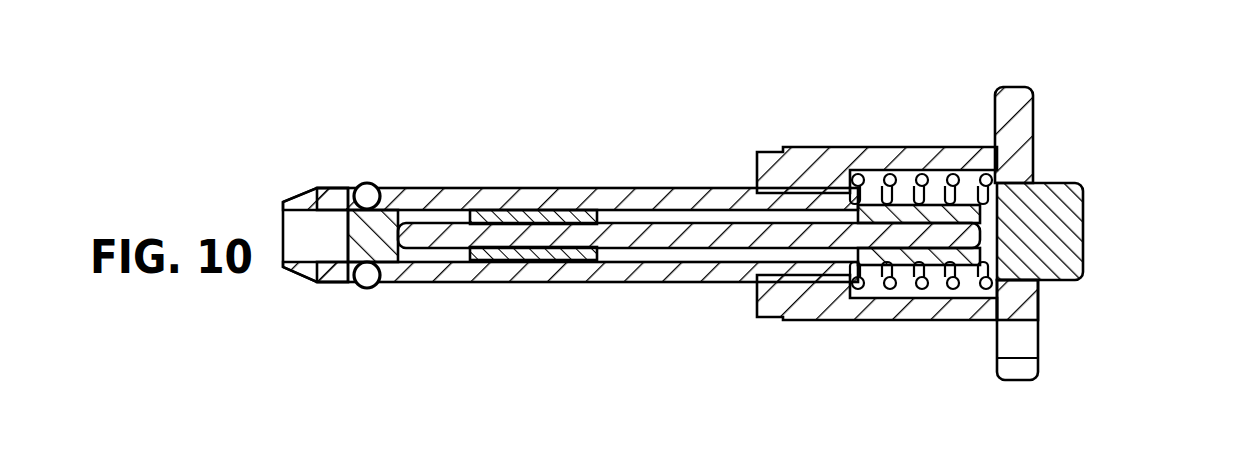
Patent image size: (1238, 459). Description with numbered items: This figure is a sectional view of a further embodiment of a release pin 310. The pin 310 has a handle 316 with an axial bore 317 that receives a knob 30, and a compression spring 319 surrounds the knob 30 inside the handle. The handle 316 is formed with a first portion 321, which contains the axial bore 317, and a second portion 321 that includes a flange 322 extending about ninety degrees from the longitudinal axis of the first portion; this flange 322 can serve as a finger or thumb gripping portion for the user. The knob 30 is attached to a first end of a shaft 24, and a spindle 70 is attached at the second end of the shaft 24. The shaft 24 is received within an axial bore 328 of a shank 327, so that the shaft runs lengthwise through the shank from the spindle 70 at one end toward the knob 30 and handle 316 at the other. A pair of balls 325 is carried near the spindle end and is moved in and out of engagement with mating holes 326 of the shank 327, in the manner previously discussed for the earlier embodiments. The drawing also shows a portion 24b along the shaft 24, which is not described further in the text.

The pin 310 is at (728, 112).
The shank 327 is at (305, 189).
The balls 325 is at (368, 185).
The mating holes 326 is at (360, 288).
The axial bore 328 is at (445, 204).
The spindle 70 is at (446, 240).
The shaft 24 is at (700, 240).
The shaft sleeve 24b is at (490, 258).
The first portion 321 is at (843, 160).
The compression spring 319 is at (917, 173).
The handle 316 is at (803, 315).
The axial bore 317 is at (910, 290).
The knob 30 is at (1080, 236).
The flange 322 is at (1030, 378).